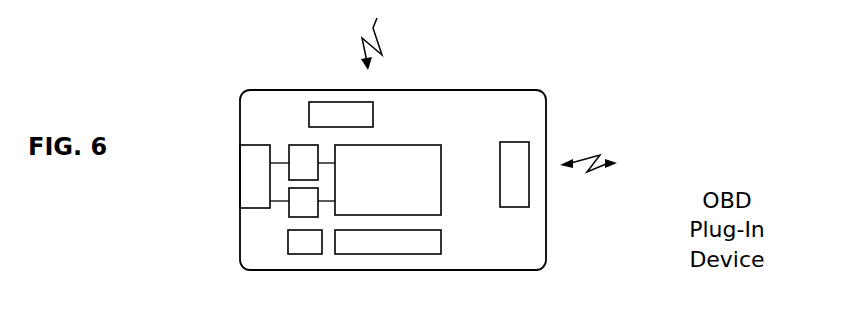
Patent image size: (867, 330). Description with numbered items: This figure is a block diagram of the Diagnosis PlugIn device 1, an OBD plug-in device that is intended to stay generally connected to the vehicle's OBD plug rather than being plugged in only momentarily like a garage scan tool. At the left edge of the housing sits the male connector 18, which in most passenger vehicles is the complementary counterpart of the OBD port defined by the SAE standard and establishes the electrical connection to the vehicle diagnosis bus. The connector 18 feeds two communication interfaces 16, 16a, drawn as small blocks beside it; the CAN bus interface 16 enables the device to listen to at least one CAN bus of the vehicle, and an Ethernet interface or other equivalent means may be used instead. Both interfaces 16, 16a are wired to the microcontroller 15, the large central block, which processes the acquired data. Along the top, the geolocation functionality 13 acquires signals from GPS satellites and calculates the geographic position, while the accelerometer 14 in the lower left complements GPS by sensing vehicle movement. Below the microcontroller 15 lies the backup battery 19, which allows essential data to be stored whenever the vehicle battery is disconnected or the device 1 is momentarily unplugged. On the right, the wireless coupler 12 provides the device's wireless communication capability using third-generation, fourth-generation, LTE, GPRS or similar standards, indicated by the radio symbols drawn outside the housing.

The Diagnosis PlugIn device 1 is at (564, 252).
The wireless coupler 12 is at (517, 142).
The geolocation functionality 13 is at (323, 102).
The accelerometer 14 is at (287, 238).
The microcontroller 15 is at (427, 142).
The CAN bus interface 16 is at (303, 145).
The communication interface 16a is at (287, 213).
The male connector 18 is at (243, 157).
The backup battery 19 is at (442, 242).